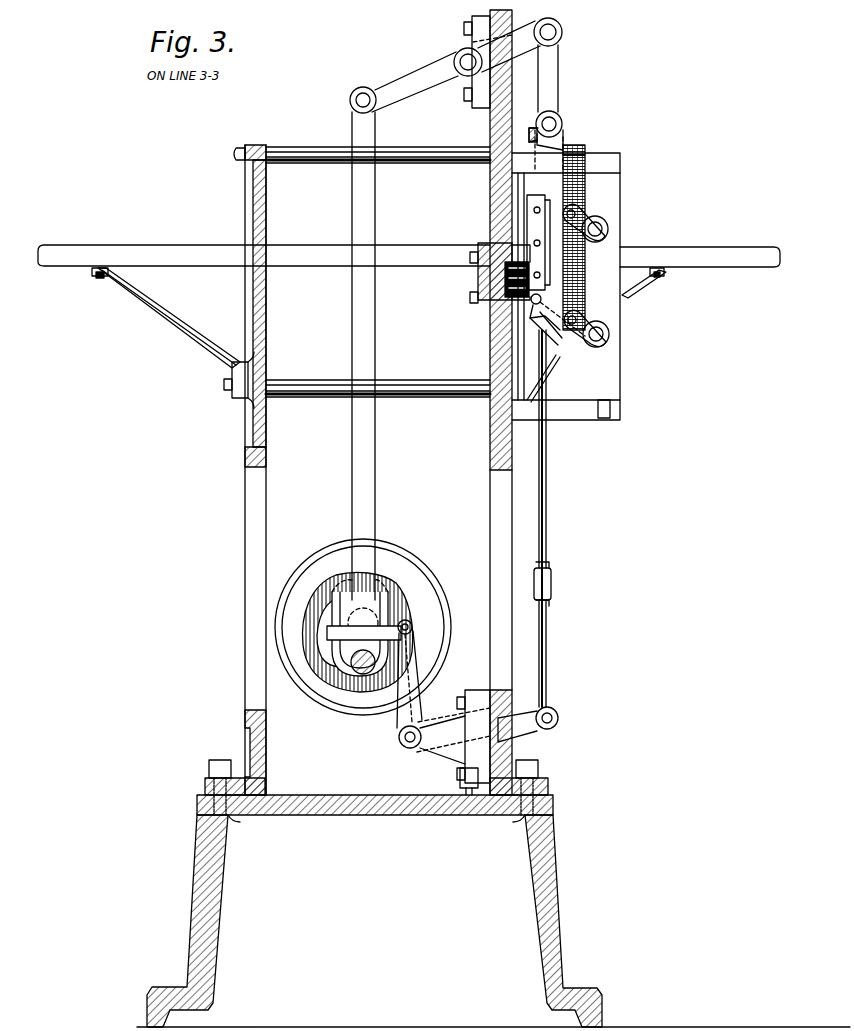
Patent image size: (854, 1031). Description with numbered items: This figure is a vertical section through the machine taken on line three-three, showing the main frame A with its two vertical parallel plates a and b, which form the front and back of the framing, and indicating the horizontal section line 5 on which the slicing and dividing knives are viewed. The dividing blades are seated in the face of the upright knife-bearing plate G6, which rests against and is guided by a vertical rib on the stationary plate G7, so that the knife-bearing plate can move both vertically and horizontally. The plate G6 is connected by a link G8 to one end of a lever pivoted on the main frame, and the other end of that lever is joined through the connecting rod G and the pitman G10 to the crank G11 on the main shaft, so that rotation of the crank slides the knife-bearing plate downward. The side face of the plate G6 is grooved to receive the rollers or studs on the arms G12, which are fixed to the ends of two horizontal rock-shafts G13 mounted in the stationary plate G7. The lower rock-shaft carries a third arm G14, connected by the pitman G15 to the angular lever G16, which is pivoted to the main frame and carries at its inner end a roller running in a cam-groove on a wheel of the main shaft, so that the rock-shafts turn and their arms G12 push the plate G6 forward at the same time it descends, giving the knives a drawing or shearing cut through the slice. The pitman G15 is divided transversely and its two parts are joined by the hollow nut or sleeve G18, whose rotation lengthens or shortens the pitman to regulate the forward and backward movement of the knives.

The main frame A is at (493, 518).
The front vertical plate a is at (489, 402).
The back vertical plate b is at (253, 470).
The section line 5 5 is at (478, 277).
The connecting rod G is at (556, 77).
The knife-bearing plate G6 is at (456, 66).
The stationary plate G7 is at (566, 286).
The link G8 is at (543, 233).
The pitman G10 is at (362, 342).
The crank G11 is at (369, 690).
The arms G12 is at (592, 273).
The rock-shafts G13 is at (601, 288).
The third arm G14 is at (545, 320).
The pitman G15 is at (546, 483).
The angular lever G16 is at (473, 692).
The hollow nut or sleeve G18 is at (552, 580).